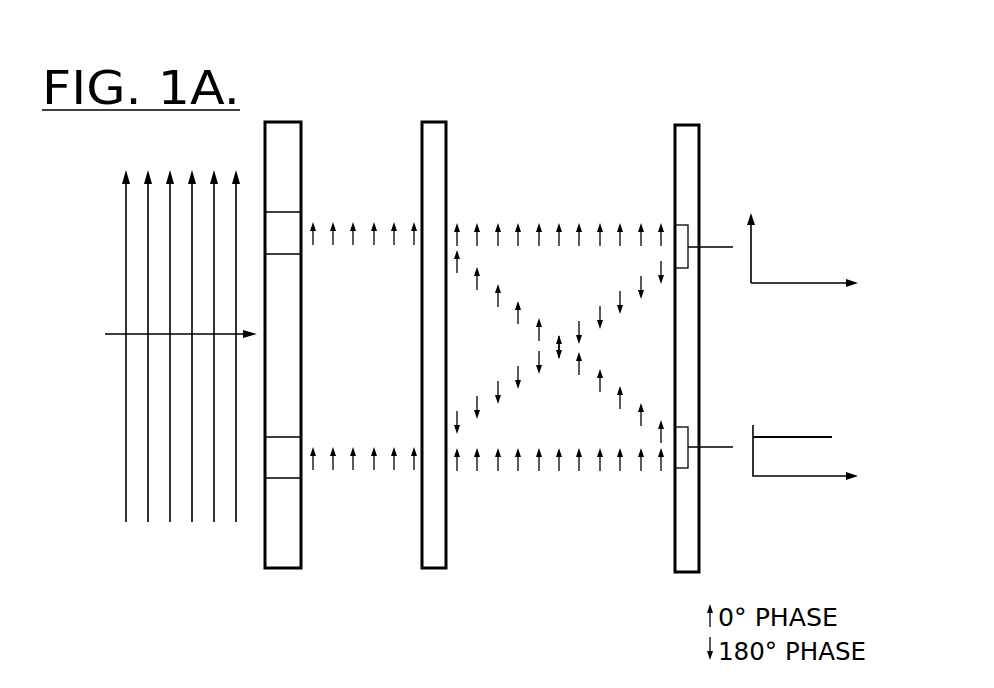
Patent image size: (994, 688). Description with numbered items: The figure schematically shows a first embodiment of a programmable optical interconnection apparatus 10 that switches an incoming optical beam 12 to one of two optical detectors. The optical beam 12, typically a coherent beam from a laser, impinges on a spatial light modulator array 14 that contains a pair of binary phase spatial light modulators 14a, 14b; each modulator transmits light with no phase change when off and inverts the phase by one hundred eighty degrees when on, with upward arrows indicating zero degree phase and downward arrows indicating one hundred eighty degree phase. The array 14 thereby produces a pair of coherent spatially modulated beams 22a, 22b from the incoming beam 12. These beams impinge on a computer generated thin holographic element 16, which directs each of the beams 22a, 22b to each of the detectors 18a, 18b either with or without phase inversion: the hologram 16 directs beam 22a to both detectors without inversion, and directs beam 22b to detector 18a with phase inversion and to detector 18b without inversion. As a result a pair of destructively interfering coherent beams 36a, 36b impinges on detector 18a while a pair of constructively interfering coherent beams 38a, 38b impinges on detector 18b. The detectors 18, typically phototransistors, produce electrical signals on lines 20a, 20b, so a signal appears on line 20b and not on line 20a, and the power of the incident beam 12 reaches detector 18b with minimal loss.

The optical interconnection apparatus 10 is at (796, 86).
The optical beam 12 is at (115, 208).
The spatial light modulator array 14 is at (283, 120).
The spatial light modulator 14a is at (288, 247).
The spatial light modulator 14b is at (303, 440).
The holographic element 16 is at (436, 122).
The detectors 18 is at (681, 124).
The optical detector 18a is at (683, 234).
The optical detector 18b is at (685, 468).
The line 20a is at (715, 250).
The line 20b is at (718, 447).
The spatially modulated beam 22a is at (362, 212).
The spatially modulated beam 22b is at (373, 478).
The destructively interfering coherent beam 36a is at (543, 215).
The destructively interfering coherent beam 36b is at (613, 298).
The constructively interfering coherent beam 38a is at (610, 398).
The constructively interfering coherent beam 38b is at (552, 472).